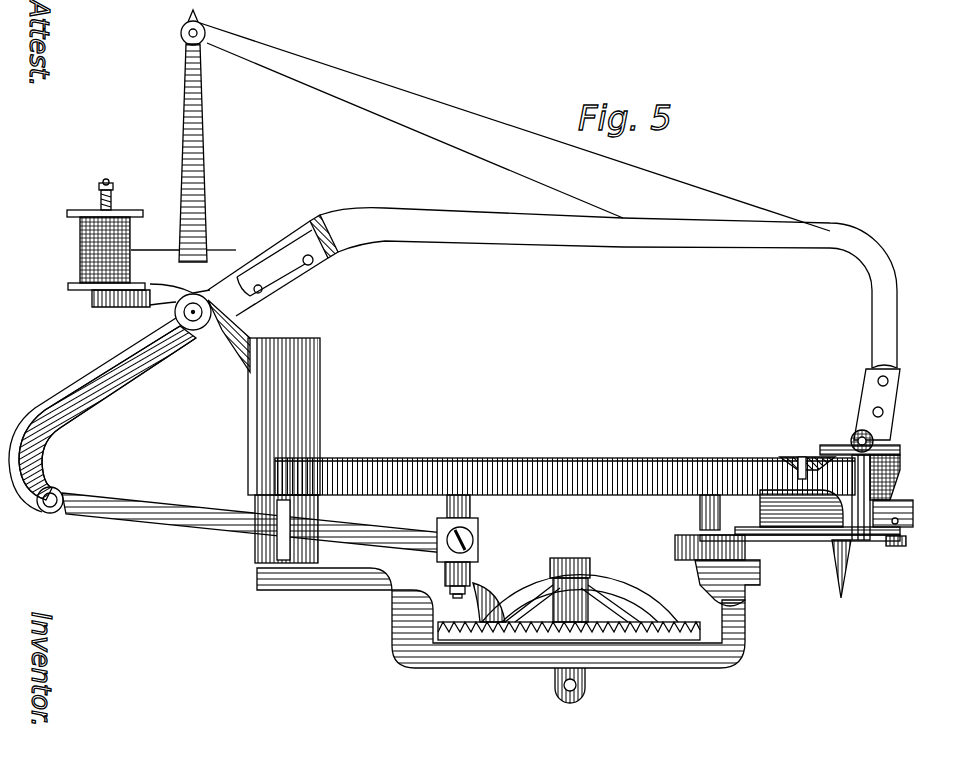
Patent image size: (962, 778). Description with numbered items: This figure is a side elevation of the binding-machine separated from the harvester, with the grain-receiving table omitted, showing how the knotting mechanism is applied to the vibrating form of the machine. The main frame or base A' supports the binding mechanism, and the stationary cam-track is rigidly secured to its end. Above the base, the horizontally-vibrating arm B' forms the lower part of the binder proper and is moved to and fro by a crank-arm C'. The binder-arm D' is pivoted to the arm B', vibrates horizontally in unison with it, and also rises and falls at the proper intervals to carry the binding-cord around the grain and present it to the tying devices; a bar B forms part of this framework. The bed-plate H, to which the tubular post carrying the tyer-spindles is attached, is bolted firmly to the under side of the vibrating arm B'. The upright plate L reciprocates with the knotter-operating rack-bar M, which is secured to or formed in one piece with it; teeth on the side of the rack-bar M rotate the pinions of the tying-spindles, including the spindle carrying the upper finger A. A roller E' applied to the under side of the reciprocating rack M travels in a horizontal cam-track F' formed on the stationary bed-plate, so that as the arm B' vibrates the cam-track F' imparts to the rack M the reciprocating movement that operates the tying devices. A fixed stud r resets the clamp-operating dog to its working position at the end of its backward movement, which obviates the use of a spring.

The binder-arm D' is at (554, 318).
The horizontal bar B is at (565, 463).
The horizontally-vibrating arm B' is at (264, 431).
The crank-arm C' is at (475, 546).
The upper finger A is at (501, 613).
The main frame A' is at (611, 685).
The roller E' is at (726, 562).
The horizontal cam-track F' is at (753, 583).
The upright plate L is at (905, 502).
The bed-plate H is at (900, 540).
The rack-bar M is at (893, 548).
The fixed stud r is at (806, 478).